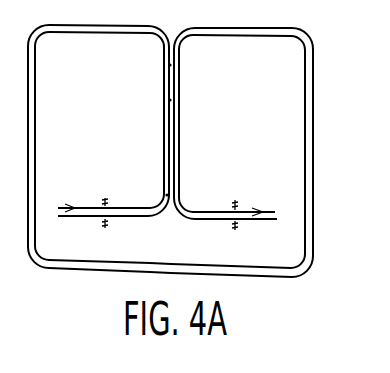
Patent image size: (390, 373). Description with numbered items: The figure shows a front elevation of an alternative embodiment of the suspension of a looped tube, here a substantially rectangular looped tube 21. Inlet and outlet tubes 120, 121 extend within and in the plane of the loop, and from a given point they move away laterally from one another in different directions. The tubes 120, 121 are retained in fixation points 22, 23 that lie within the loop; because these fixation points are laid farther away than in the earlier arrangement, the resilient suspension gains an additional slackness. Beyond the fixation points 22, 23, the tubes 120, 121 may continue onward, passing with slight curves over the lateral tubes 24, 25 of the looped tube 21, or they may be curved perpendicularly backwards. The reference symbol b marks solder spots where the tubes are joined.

The looped tube 21 is at (200, 151).
The fixation point 22 is at (110, 205).
The fixation point 23 is at (228, 204).
The lateral tube 24 is at (305, 154).
The lateral tube 25 is at (33, 105).
The inlet tube 120 is at (178, 145).
The outlet tube 121 is at (164, 118).
The solder spot b is at (171, 100).